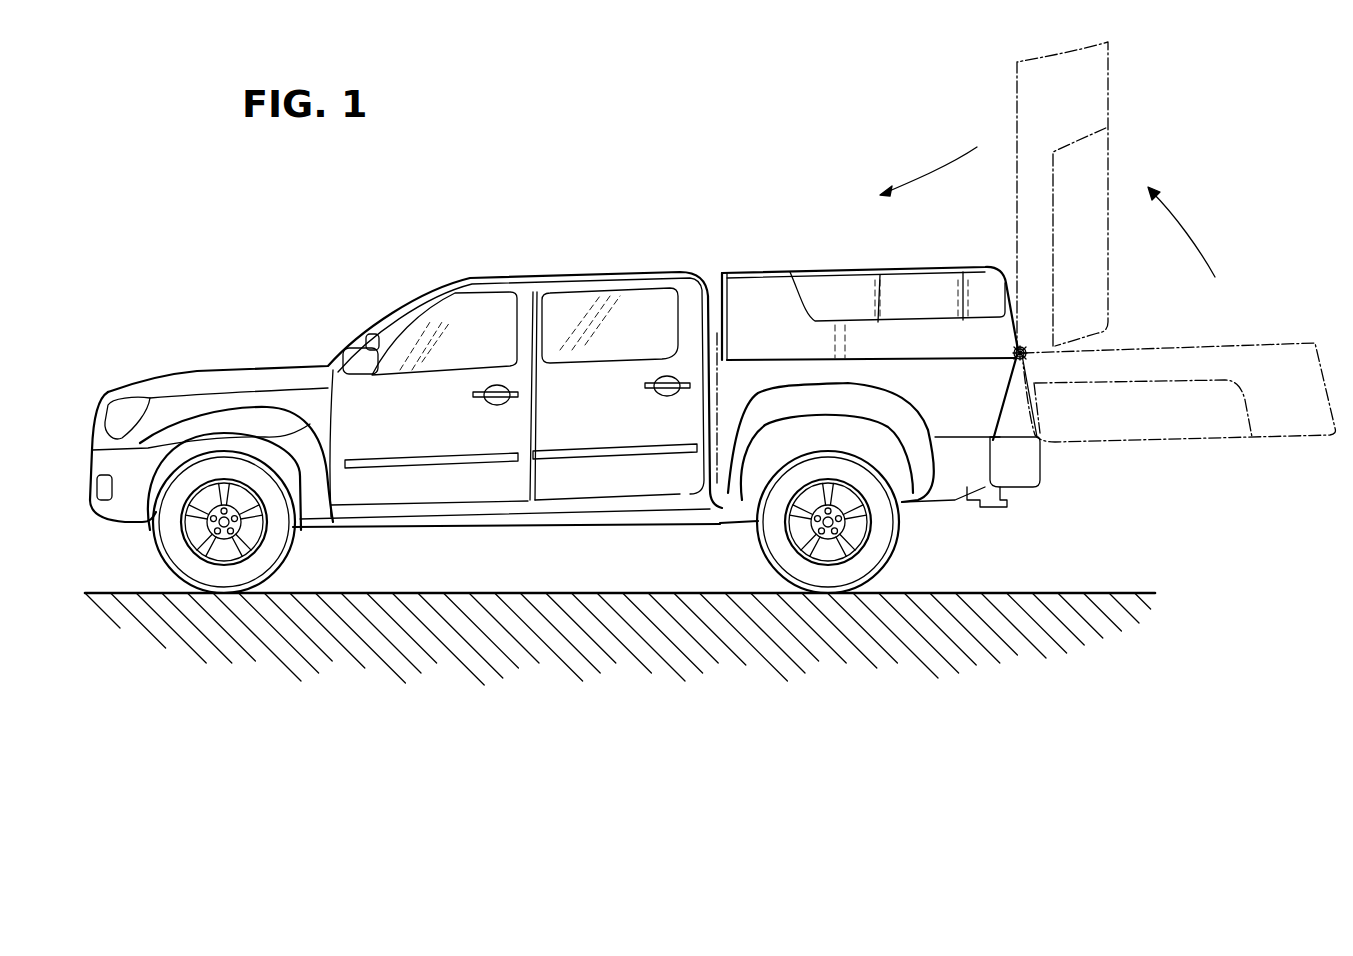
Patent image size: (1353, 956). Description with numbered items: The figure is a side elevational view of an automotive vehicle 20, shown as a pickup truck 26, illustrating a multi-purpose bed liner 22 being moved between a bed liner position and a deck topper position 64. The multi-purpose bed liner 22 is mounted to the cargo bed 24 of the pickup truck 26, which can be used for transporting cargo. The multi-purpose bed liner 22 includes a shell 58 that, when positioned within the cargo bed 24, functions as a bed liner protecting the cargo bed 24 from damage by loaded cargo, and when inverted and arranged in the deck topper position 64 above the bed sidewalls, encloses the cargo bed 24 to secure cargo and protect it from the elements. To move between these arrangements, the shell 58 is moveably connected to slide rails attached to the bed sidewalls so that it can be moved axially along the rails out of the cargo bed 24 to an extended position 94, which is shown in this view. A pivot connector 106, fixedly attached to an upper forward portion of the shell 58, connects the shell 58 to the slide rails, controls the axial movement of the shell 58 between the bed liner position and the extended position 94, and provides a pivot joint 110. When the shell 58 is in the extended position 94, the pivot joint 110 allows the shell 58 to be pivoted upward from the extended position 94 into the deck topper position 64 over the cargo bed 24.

The automotive vehicle 20 is at (327, 292).
The pickup truck 26 is at (480, 282).
The cargo bed 24 is at (760, 373).
The multi-purpose bed liner 22 is at (762, 270).
The shell 58 is at (850, 263).
The deck topper position 64 is at (935, 262).
The pivot connector 106 is at (1022, 353).
The pivot joint 110 is at (1017, 357).
The extended position 94 is at (1187, 440).